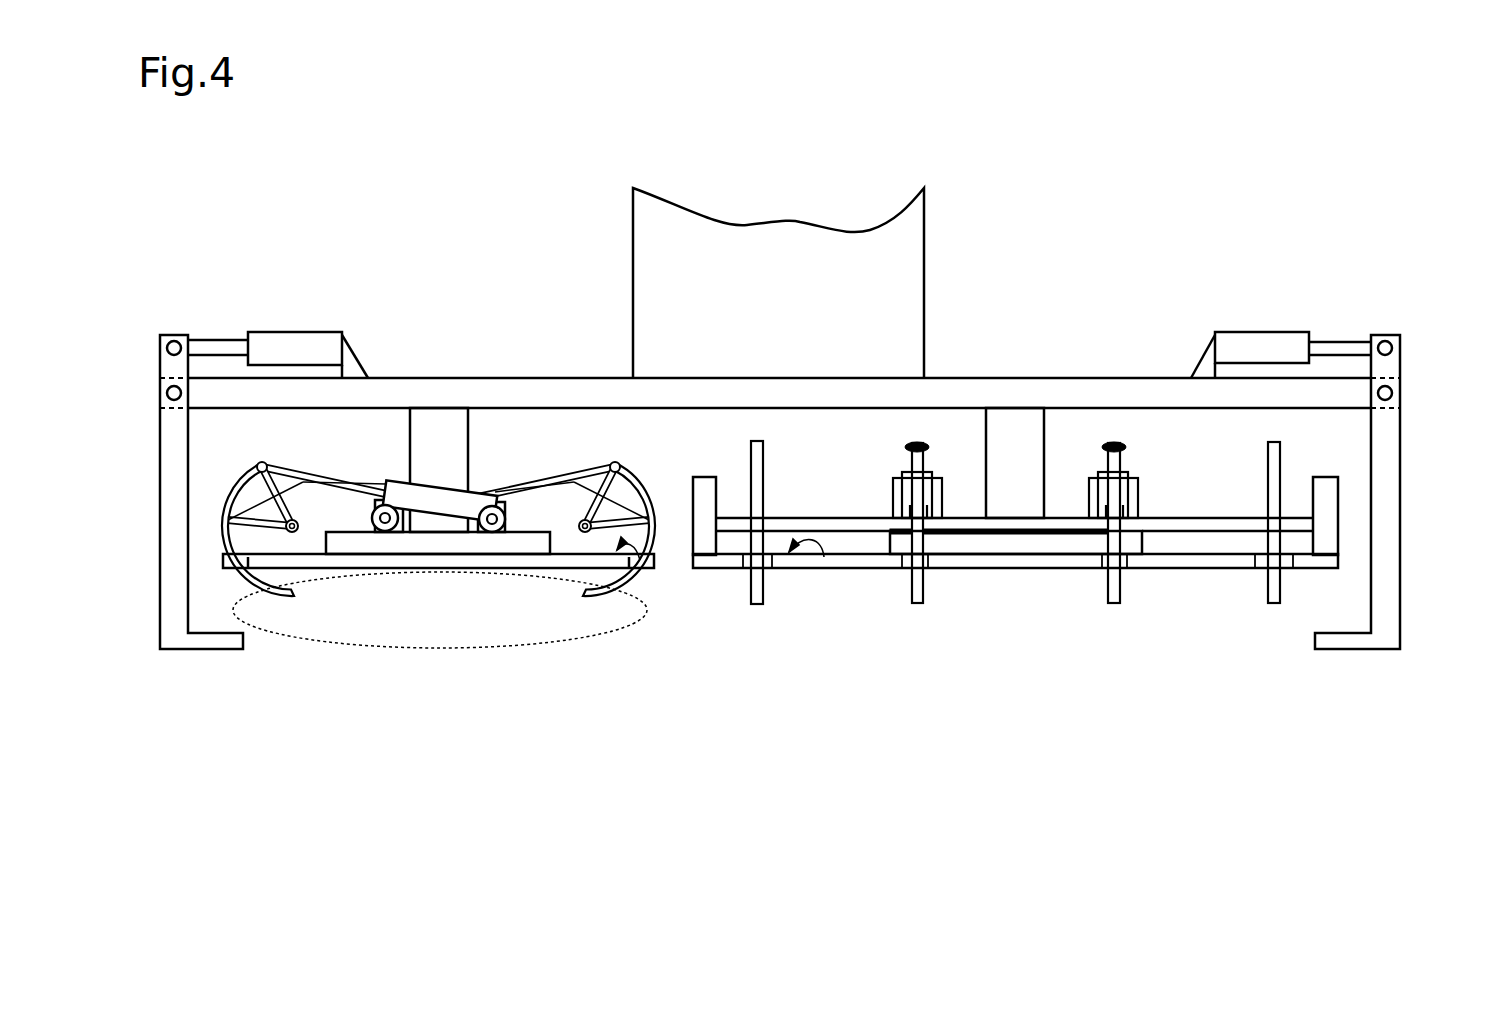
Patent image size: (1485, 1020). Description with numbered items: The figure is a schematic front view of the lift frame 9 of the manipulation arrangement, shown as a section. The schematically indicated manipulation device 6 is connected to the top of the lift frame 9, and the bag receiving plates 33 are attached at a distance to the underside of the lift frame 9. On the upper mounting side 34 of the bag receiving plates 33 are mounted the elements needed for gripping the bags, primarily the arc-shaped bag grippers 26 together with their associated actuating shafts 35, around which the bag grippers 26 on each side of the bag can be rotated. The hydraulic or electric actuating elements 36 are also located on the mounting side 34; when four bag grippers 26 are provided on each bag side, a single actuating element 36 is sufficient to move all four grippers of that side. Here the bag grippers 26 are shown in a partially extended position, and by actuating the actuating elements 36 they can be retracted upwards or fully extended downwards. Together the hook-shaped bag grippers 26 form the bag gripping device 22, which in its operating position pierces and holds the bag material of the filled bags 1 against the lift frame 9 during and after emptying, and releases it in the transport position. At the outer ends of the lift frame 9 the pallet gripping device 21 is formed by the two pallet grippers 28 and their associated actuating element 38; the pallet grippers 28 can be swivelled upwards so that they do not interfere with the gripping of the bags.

The filled bags 1 is at (570, 648).
The manipulation device 6 is at (845, 252).
The lift frame 9 is at (502, 395).
The pallet gripping device 21 is at (186, 316).
The bag gripping device 22 is at (338, 466).
The bag grippers 26 is at (271, 592).
The pallet grippers 28 is at (180, 497).
The bag receiving plates 33 is at (473, 568).
The upper mounting side 34 is at (824, 557).
The actuating shafts 35 is at (293, 528).
The actuating elements 36 is at (397, 500).
The actuating element 38 is at (300, 345).